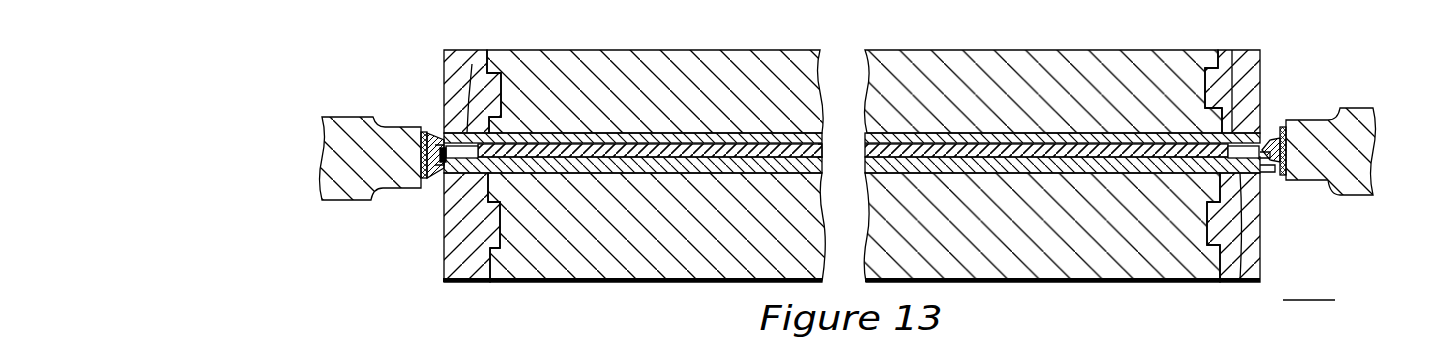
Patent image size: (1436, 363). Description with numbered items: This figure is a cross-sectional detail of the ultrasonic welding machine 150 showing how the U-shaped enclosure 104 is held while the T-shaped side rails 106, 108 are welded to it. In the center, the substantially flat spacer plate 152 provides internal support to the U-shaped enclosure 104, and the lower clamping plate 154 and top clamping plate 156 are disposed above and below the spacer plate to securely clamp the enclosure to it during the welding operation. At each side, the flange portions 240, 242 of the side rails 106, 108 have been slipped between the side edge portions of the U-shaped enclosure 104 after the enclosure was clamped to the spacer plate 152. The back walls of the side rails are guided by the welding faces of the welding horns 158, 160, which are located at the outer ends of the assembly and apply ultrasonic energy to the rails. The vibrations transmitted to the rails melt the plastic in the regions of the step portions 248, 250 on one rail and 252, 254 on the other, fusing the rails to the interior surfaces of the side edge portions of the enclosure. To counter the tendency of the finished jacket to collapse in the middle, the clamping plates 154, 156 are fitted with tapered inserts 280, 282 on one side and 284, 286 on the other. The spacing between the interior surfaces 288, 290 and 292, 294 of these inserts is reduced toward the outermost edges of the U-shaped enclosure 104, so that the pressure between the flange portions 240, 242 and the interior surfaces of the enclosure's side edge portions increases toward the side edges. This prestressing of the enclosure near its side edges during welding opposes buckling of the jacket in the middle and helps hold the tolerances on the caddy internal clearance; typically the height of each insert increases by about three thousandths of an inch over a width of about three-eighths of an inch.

The U-shaped enclosure 104 is at (632, 135).
The T-shaped side rail 106 is at (422, 150).
The T-shaped side rail 108 is at (1285, 154).
The ultrasonic welding machine 150 is at (1309, 289).
The spacer plate 152 is at (822, 150).
The lower clamping plate 154 is at (1052, 280).
The top clamping plate 156 is at (960, 52).
The welding horn 158 is at (333, 140).
The welding horn 160 is at (1360, 132).
The flange portion 240 is at (430, 182).
The flange portion 242 is at (1268, 158).
The step portion 248 is at (437, 140).
The step portion 250 is at (438, 165).
The step portion 252 is at (1270, 140).
The step portion 254 is at (1265, 161).
The tapered insert 280 is at (443, 50).
The tapered insert 282 is at (443, 282).
The tapered insert 284 is at (1240, 50).
The tapered insert 286 is at (1243, 282).
The interior surface 288 is at (494, 72).
The interior surface 290 is at (468, 175).
The interior surface 292 is at (1232, 66).
The interior surface 294 is at (1236, 282).